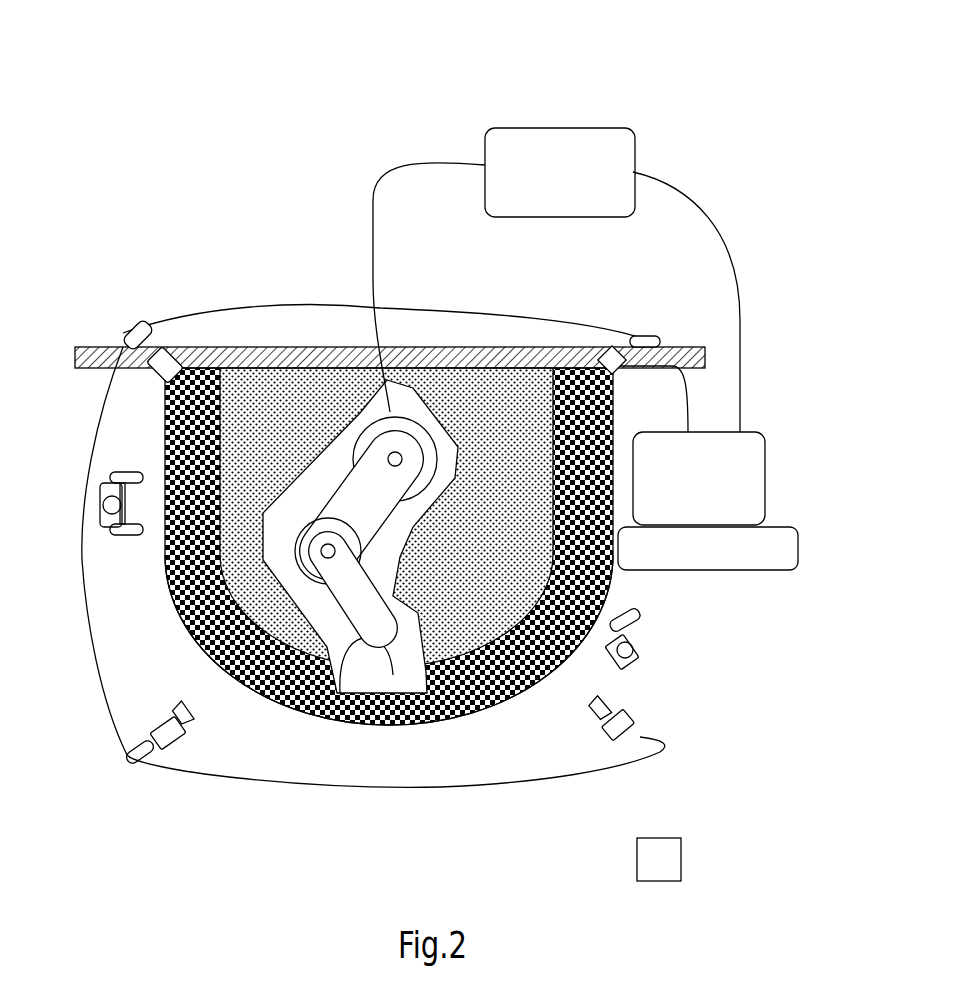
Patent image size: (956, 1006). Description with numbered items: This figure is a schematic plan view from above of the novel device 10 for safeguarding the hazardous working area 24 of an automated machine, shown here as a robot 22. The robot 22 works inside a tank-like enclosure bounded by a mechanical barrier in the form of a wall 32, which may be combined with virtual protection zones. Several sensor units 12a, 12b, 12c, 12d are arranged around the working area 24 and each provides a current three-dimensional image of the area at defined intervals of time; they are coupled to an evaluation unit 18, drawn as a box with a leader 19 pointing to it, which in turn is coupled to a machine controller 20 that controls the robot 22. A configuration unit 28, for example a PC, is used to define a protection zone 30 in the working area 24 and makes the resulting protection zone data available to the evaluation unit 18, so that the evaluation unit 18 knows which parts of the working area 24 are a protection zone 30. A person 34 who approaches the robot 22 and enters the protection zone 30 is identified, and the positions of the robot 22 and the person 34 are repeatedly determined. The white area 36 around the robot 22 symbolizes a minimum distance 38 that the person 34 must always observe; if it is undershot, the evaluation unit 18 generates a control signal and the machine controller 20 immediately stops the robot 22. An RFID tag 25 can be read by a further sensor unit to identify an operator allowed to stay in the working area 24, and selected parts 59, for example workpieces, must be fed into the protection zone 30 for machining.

The device 10 is at (307, 222).
The sensor unit 12a is at (630, 713).
The sensor unit 12b is at (155, 722).
The sensor unit 12c is at (160, 345).
The sensor unit 12d is at (607, 345).
The evaluation unit 18 is at (765, 452).
The evaluation unit 19 is at (735, 430).
The machine controller 20 is at (552, 128).
The robot 22 is at (318, 715).
The hazardous working area 24 is at (508, 708).
The RFID tag 25 is at (624, 613).
The configuration unit 28 is at (773, 571).
The protection zone 30 is at (270, 391).
The wall 32 is at (76, 347).
The person 34 is at (643, 637).
The area 36 is at (375, 670).
The minimum distance 38 is at (433, 720).
The parts 59 is at (683, 855).